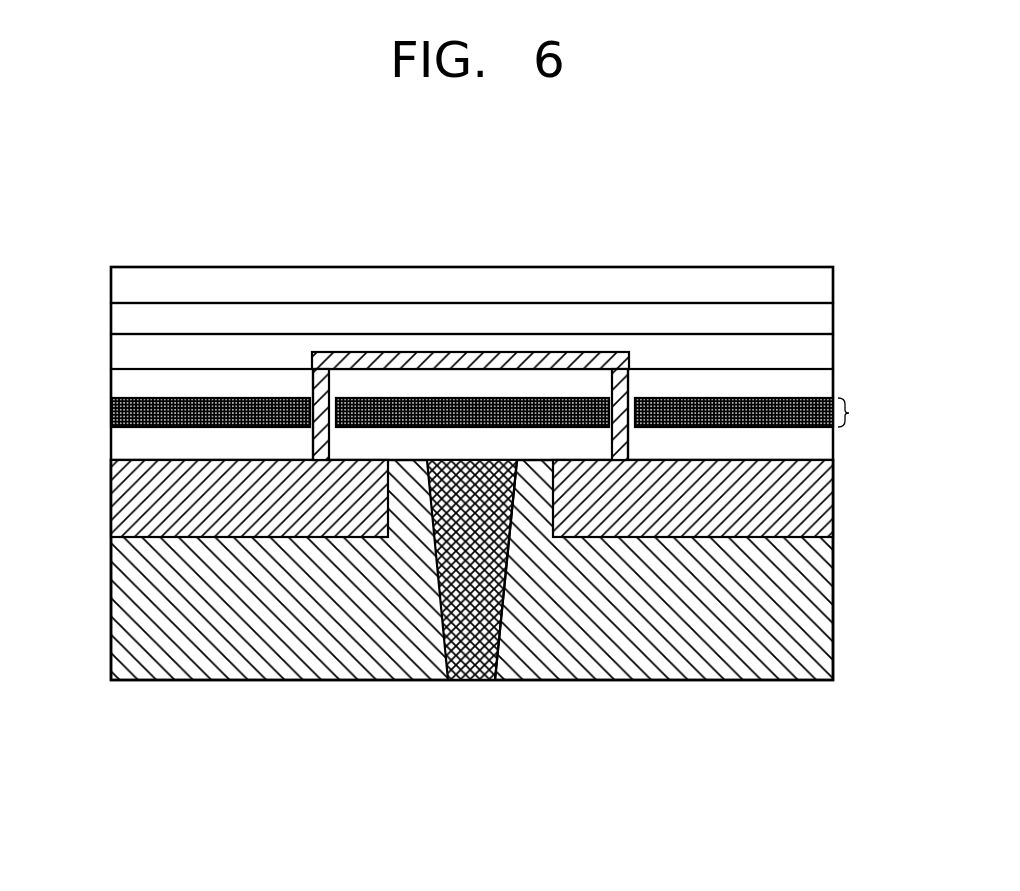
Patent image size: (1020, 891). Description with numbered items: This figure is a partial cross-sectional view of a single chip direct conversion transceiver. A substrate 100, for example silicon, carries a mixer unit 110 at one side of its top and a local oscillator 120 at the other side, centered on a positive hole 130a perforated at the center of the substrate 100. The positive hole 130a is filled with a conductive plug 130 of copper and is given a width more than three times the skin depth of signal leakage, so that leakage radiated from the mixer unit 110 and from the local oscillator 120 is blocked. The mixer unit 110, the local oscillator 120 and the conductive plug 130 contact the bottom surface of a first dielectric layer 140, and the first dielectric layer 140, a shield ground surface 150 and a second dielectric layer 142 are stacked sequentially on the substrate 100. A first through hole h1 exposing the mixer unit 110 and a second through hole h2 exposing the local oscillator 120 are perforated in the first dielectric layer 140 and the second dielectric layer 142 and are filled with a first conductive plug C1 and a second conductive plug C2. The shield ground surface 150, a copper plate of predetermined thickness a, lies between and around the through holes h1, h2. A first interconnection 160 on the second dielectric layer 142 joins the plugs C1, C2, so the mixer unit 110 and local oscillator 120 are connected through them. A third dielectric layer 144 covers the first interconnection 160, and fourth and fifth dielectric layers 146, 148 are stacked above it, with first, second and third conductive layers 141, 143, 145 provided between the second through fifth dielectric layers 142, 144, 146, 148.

The substrate 100 is at (118, 556).
The mixer unit 110 is at (120, 497).
The local oscillator 120 is at (818, 501).
The conductive plug 130 is at (470, 680).
The positive hole 130a is at (508, 602).
The first dielectric layer 140 is at (122, 443).
The first conductive layer 141 is at (111, 369).
The second dielectric layer 142 is at (818, 385).
The second conductive layer 143 is at (111, 334).
The third dielectric layer 144 is at (818, 351).
The third conductive layer 145 is at (111, 303).
The fourth dielectric layer 146 is at (818, 318).
The fifth dielectric layer 148 is at (818, 284).
The shield ground surface 150 is at (111, 412).
The first interconnection 160 is at (472, 366).
The first conductive plug C1 is at (326, 378).
The second conductive plug C2 is at (625, 378).
The first through hole h1 is at (305, 368).
The second through hole h2 is at (638, 368).
The thickness a is at (850, 412).